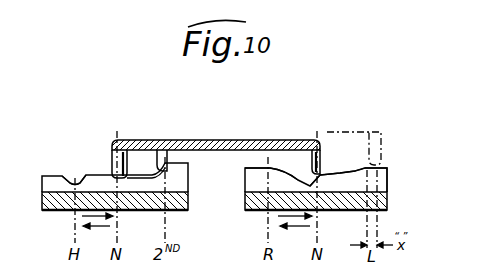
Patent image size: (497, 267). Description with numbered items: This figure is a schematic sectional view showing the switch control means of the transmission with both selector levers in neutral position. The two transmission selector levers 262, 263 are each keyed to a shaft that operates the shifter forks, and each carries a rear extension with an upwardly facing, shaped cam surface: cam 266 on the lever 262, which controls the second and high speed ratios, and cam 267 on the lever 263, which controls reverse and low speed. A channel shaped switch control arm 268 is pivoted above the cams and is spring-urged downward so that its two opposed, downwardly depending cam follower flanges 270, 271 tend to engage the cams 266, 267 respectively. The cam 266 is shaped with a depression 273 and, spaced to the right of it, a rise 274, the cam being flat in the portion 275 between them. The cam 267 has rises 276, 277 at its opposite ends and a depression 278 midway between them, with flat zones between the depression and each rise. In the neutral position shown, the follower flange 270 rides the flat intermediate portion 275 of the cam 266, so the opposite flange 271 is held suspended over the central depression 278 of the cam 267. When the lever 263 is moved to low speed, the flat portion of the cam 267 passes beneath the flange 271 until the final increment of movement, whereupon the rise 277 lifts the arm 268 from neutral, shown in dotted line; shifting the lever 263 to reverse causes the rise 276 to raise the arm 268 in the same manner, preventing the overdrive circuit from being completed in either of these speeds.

The selector lever 262 is at (42, 200).
The selector lever 263 is at (387, 200).
The cam surface 266 is at (50, 181).
The cam surface 267 is at (387, 178).
The switch control arm 268 is at (219, 140).
The cam follower flange 270 is at (113, 168).
The cam follower flange 271 is at (333, 175).
The depression 273 is at (77, 175).
The rise 274 is at (161, 152).
The flat portion 275 is at (129, 176).
The rise 276 is at (256, 167).
The rise 277 is at (381, 166).
The depression 278 is at (310, 170).